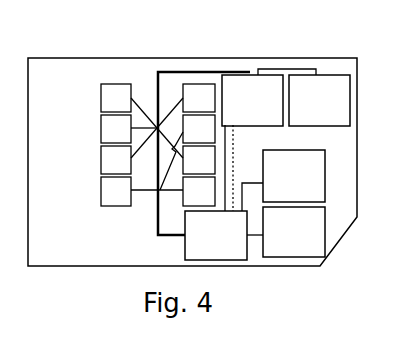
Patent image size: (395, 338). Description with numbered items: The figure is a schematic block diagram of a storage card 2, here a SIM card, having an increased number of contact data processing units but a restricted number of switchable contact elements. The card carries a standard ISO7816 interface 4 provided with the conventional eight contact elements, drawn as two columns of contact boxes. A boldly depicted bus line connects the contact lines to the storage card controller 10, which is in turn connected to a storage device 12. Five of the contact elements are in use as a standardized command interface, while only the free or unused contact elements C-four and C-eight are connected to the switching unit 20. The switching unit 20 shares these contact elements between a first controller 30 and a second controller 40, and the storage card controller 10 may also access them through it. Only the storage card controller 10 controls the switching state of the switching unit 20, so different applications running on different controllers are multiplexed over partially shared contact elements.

The storage card 2 is at (66, 67).
The interface 4 is at (215, 48).
The storage card controller 10 is at (252, 100).
The storage device 12 is at (319, 100).
The switching unit 20 is at (216, 235).
The first controller 30 is at (294, 176).
The second controller 40 is at (294, 232).